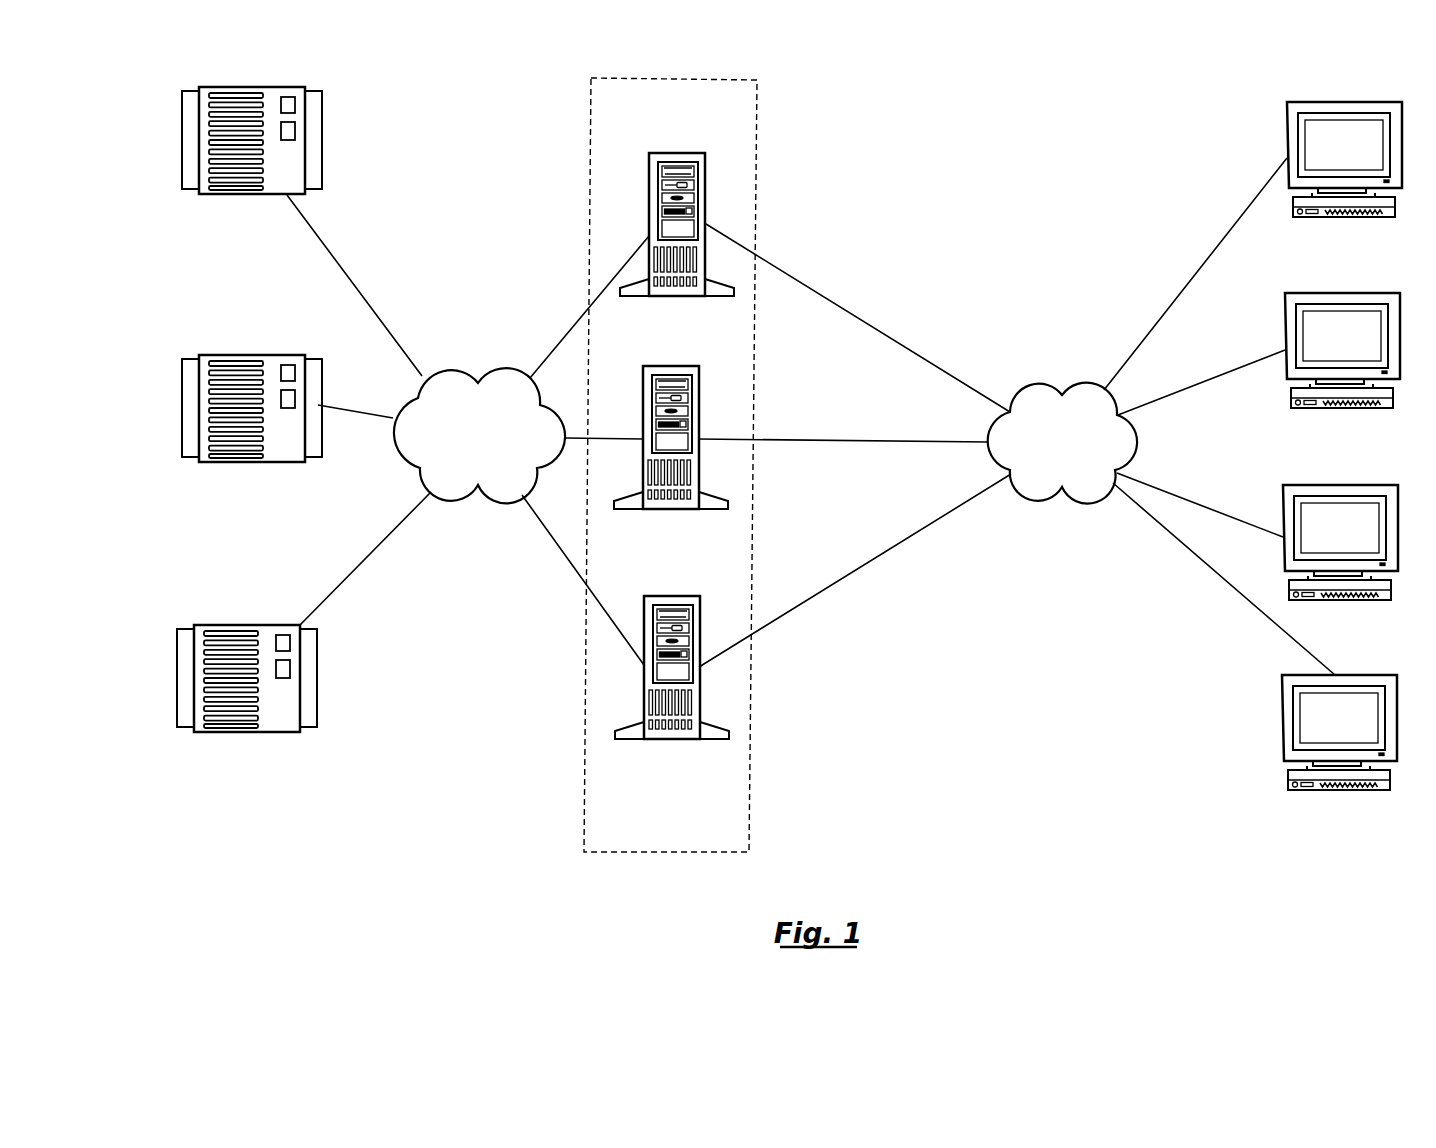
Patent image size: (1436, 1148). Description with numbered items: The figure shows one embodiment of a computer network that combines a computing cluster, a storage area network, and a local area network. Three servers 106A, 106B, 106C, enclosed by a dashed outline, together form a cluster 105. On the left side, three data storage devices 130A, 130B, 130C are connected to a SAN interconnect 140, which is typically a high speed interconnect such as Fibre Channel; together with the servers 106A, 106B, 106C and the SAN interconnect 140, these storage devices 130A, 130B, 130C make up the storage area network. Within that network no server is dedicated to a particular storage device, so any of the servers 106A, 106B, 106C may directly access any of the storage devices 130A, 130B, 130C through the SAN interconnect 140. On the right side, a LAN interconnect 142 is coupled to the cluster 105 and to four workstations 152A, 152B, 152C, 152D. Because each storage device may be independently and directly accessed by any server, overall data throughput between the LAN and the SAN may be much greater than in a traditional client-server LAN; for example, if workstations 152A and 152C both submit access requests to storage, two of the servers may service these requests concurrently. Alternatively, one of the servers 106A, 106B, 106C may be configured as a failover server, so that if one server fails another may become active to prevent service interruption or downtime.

The cluster 105 is at (583, 772).
The server 106A is at (677, 243).
The server 106B is at (671, 457).
The server 106C is at (672, 686).
The data storage device 130A is at (252, 159).
The data storage device 130B is at (252, 425).
The data storage device 130C is at (247, 697).
The SAN interconnect 140 is at (458, 464).
The LAN interconnect 142 is at (1042, 471).
The workstation 152A is at (1344, 177).
The workstation 152B is at (1342, 367).
The workstation 152C is at (1340, 559).
The workstation 152D is at (1339, 749).